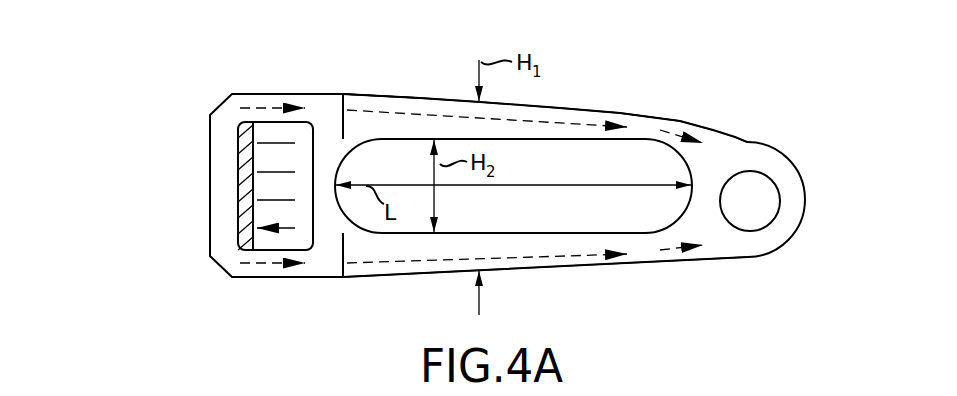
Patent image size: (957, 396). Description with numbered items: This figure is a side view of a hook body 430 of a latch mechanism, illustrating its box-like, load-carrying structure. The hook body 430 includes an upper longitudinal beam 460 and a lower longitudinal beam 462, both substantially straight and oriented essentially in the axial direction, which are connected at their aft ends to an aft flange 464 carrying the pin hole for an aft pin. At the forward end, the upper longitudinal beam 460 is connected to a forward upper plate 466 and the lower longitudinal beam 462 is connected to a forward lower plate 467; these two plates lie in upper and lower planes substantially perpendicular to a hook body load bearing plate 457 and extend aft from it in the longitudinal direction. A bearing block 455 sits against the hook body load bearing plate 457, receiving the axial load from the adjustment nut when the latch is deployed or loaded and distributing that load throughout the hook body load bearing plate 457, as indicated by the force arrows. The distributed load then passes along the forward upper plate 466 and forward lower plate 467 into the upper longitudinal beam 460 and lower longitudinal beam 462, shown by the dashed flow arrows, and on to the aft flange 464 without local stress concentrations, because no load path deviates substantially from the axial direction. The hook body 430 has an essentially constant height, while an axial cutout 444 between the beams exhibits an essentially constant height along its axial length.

The hook body 430 is at (200, 91).
The forward upper plate 466 is at (277, 94).
The upper longitudinal beam 460 is at (388, 96).
The hook body load bearing plate 457 is at (213, 137).
The bearing block 455 is at (246, 216).
The forward lower plate 467 is at (268, 278).
The lower longitudinal beam 462 is at (362, 278).
The axial cutout 444 is at (677, 231).
The aft flange 464 is at (784, 243).